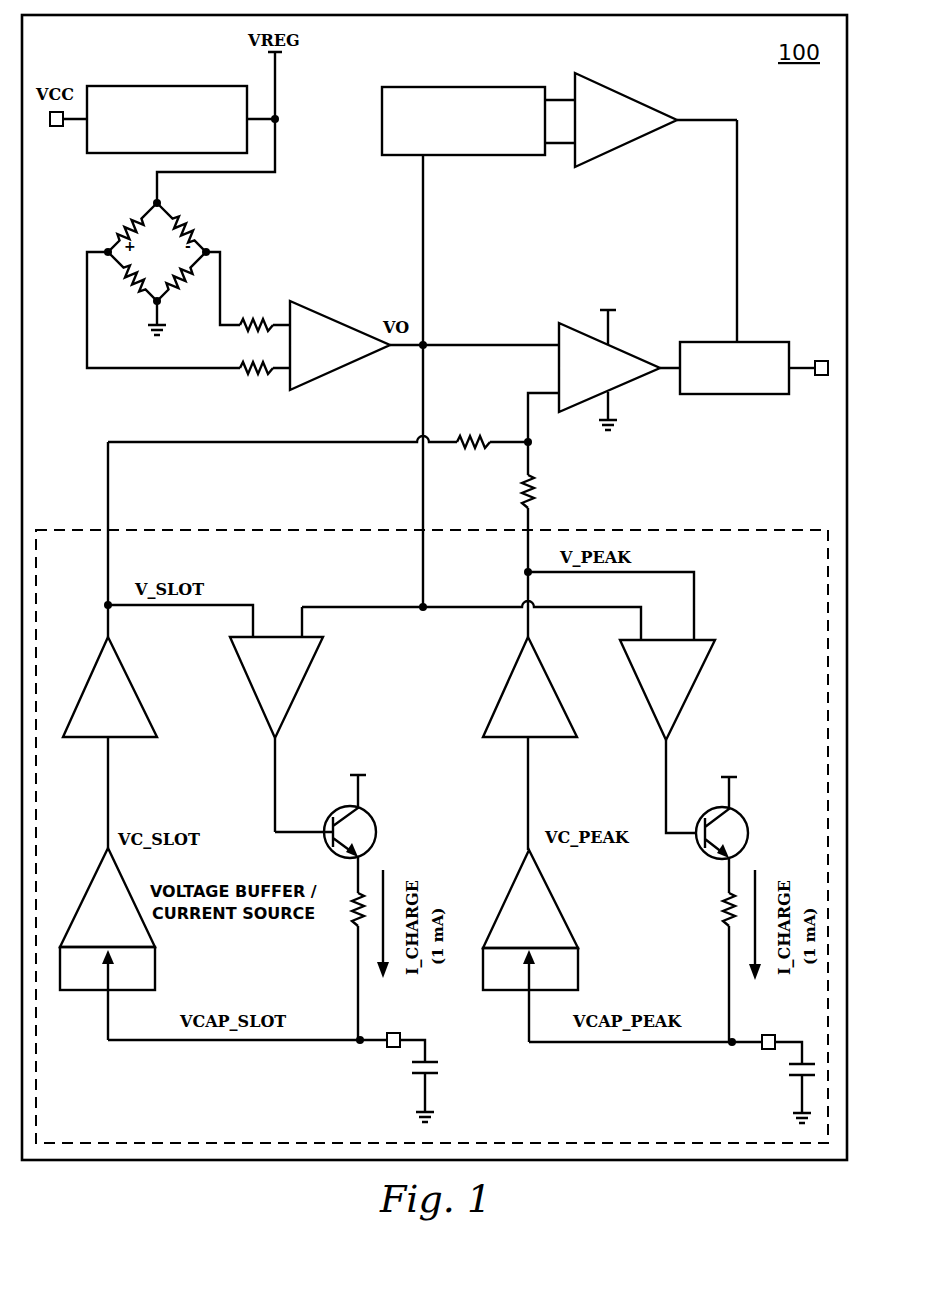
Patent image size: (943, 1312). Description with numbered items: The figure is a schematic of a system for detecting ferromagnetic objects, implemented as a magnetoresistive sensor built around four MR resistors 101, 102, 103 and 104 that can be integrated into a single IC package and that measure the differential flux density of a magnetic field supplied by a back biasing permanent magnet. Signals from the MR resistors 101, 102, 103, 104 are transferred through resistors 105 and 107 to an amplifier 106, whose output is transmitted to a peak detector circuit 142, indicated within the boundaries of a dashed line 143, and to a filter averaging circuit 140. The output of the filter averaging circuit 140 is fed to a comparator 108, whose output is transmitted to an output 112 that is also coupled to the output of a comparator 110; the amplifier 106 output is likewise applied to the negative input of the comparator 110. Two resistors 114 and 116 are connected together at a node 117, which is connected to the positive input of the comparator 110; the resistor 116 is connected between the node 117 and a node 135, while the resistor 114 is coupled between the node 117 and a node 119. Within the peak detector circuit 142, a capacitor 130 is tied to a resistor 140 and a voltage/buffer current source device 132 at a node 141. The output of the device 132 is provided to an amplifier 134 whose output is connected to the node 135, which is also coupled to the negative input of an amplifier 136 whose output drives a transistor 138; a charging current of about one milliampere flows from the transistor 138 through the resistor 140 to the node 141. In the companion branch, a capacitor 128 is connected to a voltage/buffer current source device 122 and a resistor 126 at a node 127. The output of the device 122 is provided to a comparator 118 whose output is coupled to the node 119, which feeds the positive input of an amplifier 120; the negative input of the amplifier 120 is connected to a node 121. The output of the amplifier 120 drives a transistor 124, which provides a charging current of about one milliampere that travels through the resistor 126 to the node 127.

The MR resistor 101 is at (118, 225).
The MR resistor 102 is at (194, 228).
The MR resistor 103 is at (183, 303).
The MR resistor 104 is at (132, 303).
The resistor 105 is at (258, 320).
The amplifier 106 is at (326, 300).
The resistor 107 is at (252, 374).
The comparator 108 is at (627, 89).
The comparator 110 is at (617, 340).
The output 112 is at (748, 342).
The resistor 114 is at (497, 437).
The resistor 116 is at (522, 492).
The node 117 is at (533, 444).
The comparator 118 is at (90, 662).
The node 119 is at (106, 602).
The amplifier 120 is at (251, 690).
The node 121 is at (418, 604).
The voltage/buffer current source device 122 is at (90, 870).
The transistor 124 is at (173, 86).
The resistor 126 is at (353, 920).
The node 127 is at (356, 1043).
The capacitor 128 is at (412, 1072).
The capacitor 130 is at (789, 1073).
The voltage/buffer current source device 132 is at (510, 885).
The amplifier 134 is at (515, 675).
The node 135 is at (523, 572).
The amplifier 136 is at (640, 688).
The transistor 138 is at (745, 815).
The filter averaging circuit / resistor 140 is at (428, 87).
The node 141 is at (727, 1045).
The peak detector circuit 142 is at (432, 836).
The dashed line 143 is at (737, 530).